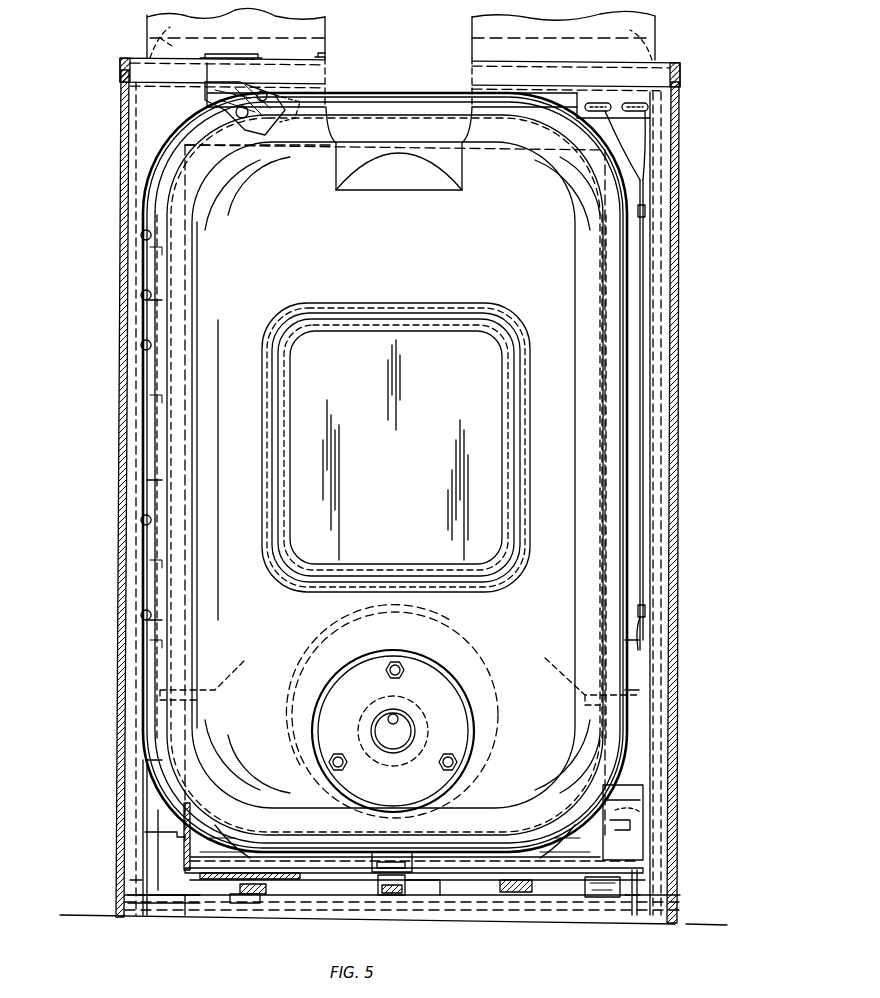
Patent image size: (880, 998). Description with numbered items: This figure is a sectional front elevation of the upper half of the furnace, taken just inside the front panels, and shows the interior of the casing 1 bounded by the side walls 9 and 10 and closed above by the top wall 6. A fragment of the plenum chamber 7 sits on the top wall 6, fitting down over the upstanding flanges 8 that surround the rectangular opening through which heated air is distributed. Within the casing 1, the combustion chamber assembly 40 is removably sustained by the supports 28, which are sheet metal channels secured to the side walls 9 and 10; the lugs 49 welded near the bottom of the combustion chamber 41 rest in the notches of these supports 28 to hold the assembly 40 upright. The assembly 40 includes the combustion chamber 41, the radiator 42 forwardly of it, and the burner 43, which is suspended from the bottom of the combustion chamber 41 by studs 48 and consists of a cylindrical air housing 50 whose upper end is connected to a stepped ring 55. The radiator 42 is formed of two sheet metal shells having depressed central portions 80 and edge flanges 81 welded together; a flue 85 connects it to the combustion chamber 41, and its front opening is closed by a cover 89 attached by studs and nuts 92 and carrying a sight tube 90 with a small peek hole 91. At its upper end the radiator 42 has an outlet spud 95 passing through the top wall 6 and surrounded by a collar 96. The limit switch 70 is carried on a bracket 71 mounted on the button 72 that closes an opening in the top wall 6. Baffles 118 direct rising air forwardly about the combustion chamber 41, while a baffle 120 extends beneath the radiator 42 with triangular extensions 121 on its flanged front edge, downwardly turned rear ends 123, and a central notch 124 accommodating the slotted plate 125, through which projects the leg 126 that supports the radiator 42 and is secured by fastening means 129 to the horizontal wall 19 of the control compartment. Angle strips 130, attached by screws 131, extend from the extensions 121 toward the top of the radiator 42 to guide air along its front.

The casing 1 is at (684, 402).
The top wall 6 is at (588, 58).
The plenum chamber 7 is at (655, 30).
The upstanding flanges 8 is at (150, 30).
The side wall 9 is at (120, 428).
The side wall 10 is at (672, 332).
The horizontal wall 19 is at (315, 900).
The supports 28 is at (150, 857).
The combustion chamber assembly 40 is at (612, 516).
The combustion chamber 41 is at (512, 148).
The radiator 42 is at (396, 278).
The burner 43 is at (472, 900).
The studs 48 is at (262, 896).
The lugs 49 is at (155, 796).
The air housing 50 is at (235, 900).
The stepped ring 55 is at (560, 880).
The limit switch 70 is at (283, 118).
The bracket 71 is at (210, 99).
The button 72 is at (250, 60).
The depressed central portions 80 is at (406, 436).
The edge flanges 81 is at (645, 195).
The flue 85 is at (468, 640).
The cover 89 is at (445, 708).
The sight tube 90 is at (410, 728).
The peek hole 91 is at (396, 714).
The studs and nuts 92 is at (403, 668).
The outlet spud 95 is at (465, 30).
The collar 96 is at (325, 40).
The baffles 118 is at (215, 698).
The baffle 120 is at (312, 862).
The triangular extensions 121 is at (215, 840).
The downwardly turned rear ends 123 is at (615, 895).
The notch 124 is at (345, 888).
The slotted plate 125 is at (400, 840).
The leg 126 is at (372, 890).
The fastening means 129 is at (425, 894).
The angle strips 130 is at (160, 320).
The screws 131 is at (158, 297).